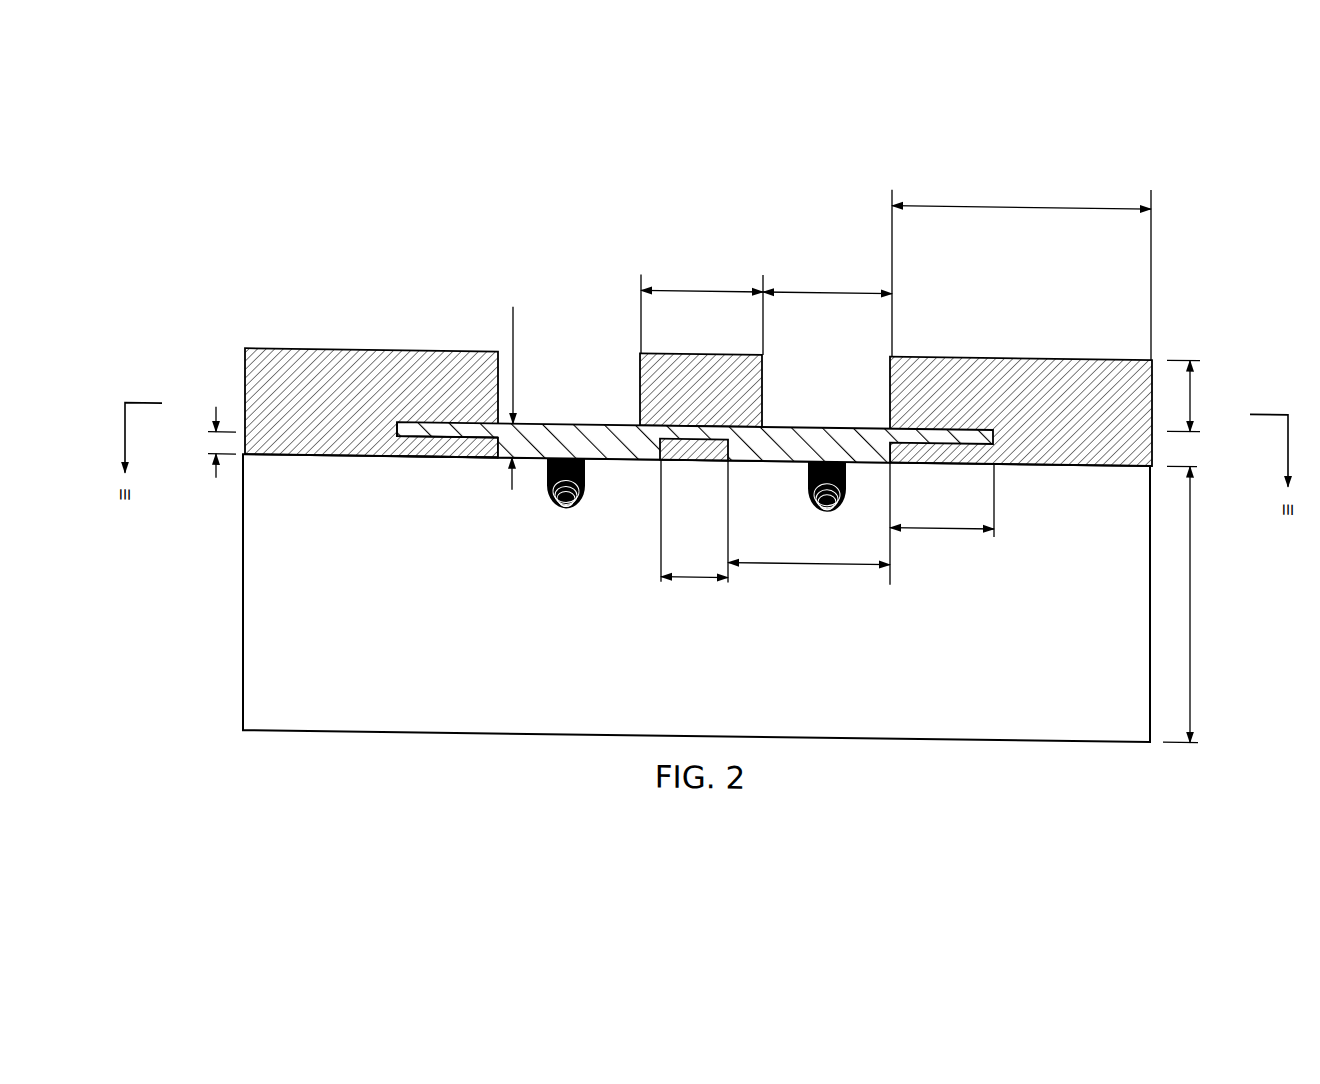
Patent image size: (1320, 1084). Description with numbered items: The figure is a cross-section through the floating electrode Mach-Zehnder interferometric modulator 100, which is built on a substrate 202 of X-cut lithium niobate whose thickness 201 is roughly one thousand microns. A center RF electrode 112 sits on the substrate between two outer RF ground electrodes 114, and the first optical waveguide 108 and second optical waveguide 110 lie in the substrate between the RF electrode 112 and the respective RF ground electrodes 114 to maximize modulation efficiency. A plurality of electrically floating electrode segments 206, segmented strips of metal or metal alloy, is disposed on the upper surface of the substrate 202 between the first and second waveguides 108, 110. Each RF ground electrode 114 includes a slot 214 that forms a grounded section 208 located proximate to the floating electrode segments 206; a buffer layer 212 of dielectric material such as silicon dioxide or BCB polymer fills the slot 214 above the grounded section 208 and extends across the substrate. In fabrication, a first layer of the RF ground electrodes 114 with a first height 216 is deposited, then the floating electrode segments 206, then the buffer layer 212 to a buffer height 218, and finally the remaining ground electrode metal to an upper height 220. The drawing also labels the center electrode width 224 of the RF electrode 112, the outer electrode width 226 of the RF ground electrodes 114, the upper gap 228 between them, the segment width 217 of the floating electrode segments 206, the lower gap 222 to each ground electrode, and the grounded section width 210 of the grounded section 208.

The floating electrode Mach-Zehnder interferometric modulator 100 is at (688, 139).
The substrate 202 is at (243, 597).
The RF ground electrodes 114 is at (412, 344).
The RF electrode 112 is at (693, 343).
The buffer layer 212 is at (563, 415).
The slot 214 is at (417, 425).
The grounded section 208 is at (470, 452).
The electrically floating electrode segments 206 is at (697, 455).
The first optical waveguide 108 is at (556, 499).
The second optical waveguide 110 is at (821, 497).
The width wg1 226 is at (1028, 157).
The width w1 224 is at (701, 254).
The gap g1 228 is at (827, 252).
The height h3 218 is at (513, 260).
The height h2 216 is at (216, 365).
The height h1 220 is at (1222, 366).
The thickness h4 201 is at (1245, 594).
The width w2 217 is at (690, 596).
The gap g2 222 is at (812, 582).
The width wg2 210 is at (944, 548).